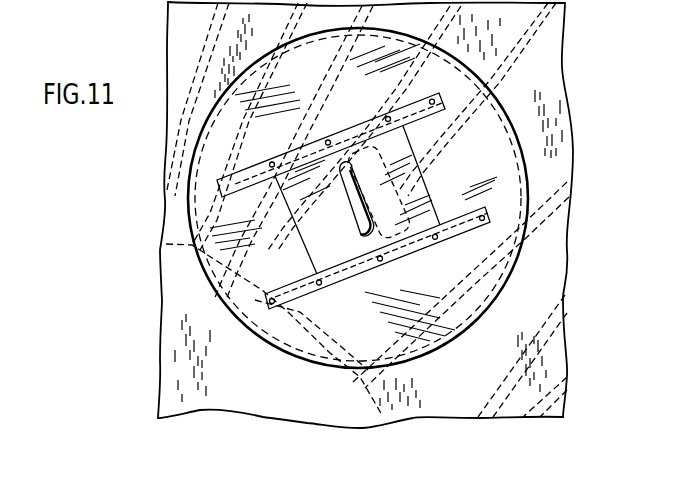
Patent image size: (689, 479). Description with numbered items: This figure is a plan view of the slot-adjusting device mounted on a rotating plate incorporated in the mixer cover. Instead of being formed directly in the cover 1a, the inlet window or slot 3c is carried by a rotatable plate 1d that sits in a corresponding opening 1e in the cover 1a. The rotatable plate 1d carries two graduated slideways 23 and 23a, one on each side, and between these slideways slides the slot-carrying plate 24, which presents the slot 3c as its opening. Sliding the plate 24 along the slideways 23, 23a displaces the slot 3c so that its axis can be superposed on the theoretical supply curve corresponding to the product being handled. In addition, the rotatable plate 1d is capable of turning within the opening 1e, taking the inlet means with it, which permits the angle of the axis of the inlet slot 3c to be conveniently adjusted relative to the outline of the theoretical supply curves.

The cover 1a is at (560, 343).
The rotatable plate 1d is at (517, 236).
The opening 1e is at (508, 277).
The graduated slideway 23 is at (440, 95).
The graduated slideway 23a is at (483, 208).
The sliding plate 24 is at (427, 179).
The slot 3c is at (357, 217).